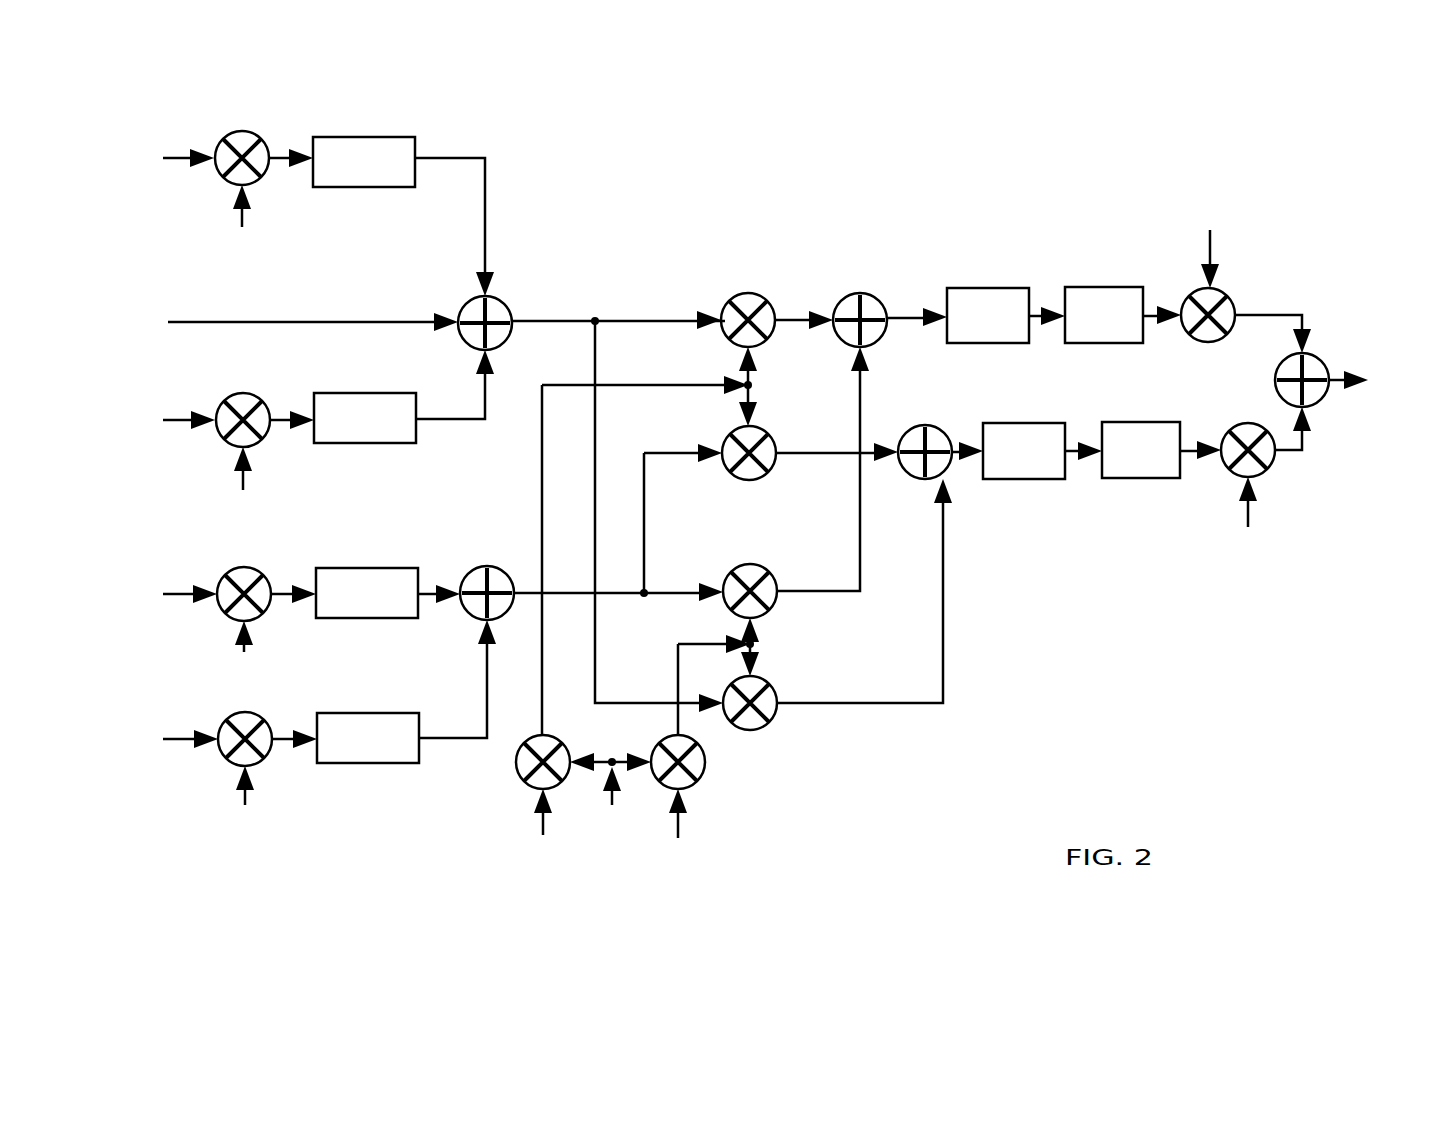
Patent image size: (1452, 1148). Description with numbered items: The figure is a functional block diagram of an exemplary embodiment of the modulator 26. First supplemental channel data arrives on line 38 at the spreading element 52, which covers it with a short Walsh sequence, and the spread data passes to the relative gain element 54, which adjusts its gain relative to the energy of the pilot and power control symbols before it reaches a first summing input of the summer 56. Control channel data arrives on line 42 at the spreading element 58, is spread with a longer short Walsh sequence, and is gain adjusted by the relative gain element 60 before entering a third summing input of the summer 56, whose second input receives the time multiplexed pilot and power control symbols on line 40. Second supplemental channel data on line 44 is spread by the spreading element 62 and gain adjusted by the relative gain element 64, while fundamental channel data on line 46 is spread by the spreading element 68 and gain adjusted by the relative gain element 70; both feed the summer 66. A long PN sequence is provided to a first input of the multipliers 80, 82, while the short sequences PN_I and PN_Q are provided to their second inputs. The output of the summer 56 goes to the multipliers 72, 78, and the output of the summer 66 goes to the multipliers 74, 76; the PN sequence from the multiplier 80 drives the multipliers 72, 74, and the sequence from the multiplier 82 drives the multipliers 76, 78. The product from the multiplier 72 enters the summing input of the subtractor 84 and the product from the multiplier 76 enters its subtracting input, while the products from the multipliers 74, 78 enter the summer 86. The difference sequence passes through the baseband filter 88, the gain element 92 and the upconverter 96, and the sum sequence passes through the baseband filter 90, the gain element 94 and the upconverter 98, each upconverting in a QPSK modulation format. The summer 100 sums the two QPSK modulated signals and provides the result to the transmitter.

The modulator 26 is at (990, 135).
The line 38 is at (180, 152).
The line 40 is at (367, 321).
The line 42 is at (182, 418).
The line 44 is at (182, 592).
The line 46 is at (183, 737).
The spreading element 52 is at (242, 130).
The relative gain element 54 is at (378, 137).
The summer 56 is at (468, 298).
The spreading element 58 is at (241, 393).
The relative gain element 60 is at (365, 393).
The spreading element 62 is at (259, 569).
The relative gain element 64 is at (403, 568).
The summer 66 is at (490, 566).
The spreading element 68 is at (267, 755).
The relative gain element 70 is at (393, 713).
The multiplier 72 is at (746, 293).
The multiplier 74 is at (730, 432).
The multiplier 76 is at (738, 566).
The multiplier 78 is at (775, 685).
The multiplier 80 is at (540, 735).
The multiplier 82 is at (707, 763).
The subtractor 84 is at (857, 293).
The summer 86 is at (924, 426).
The baseband filter 88 is at (997, 288).
The baseband filter 90 is at (1042, 423).
The gain element 92 is at (1115, 287).
The gain element 94 is at (1152, 422).
The upconverter 96 is at (1203, 288).
The upconverter 98 is at (1248, 422).
The summer 100 is at (1308, 352).